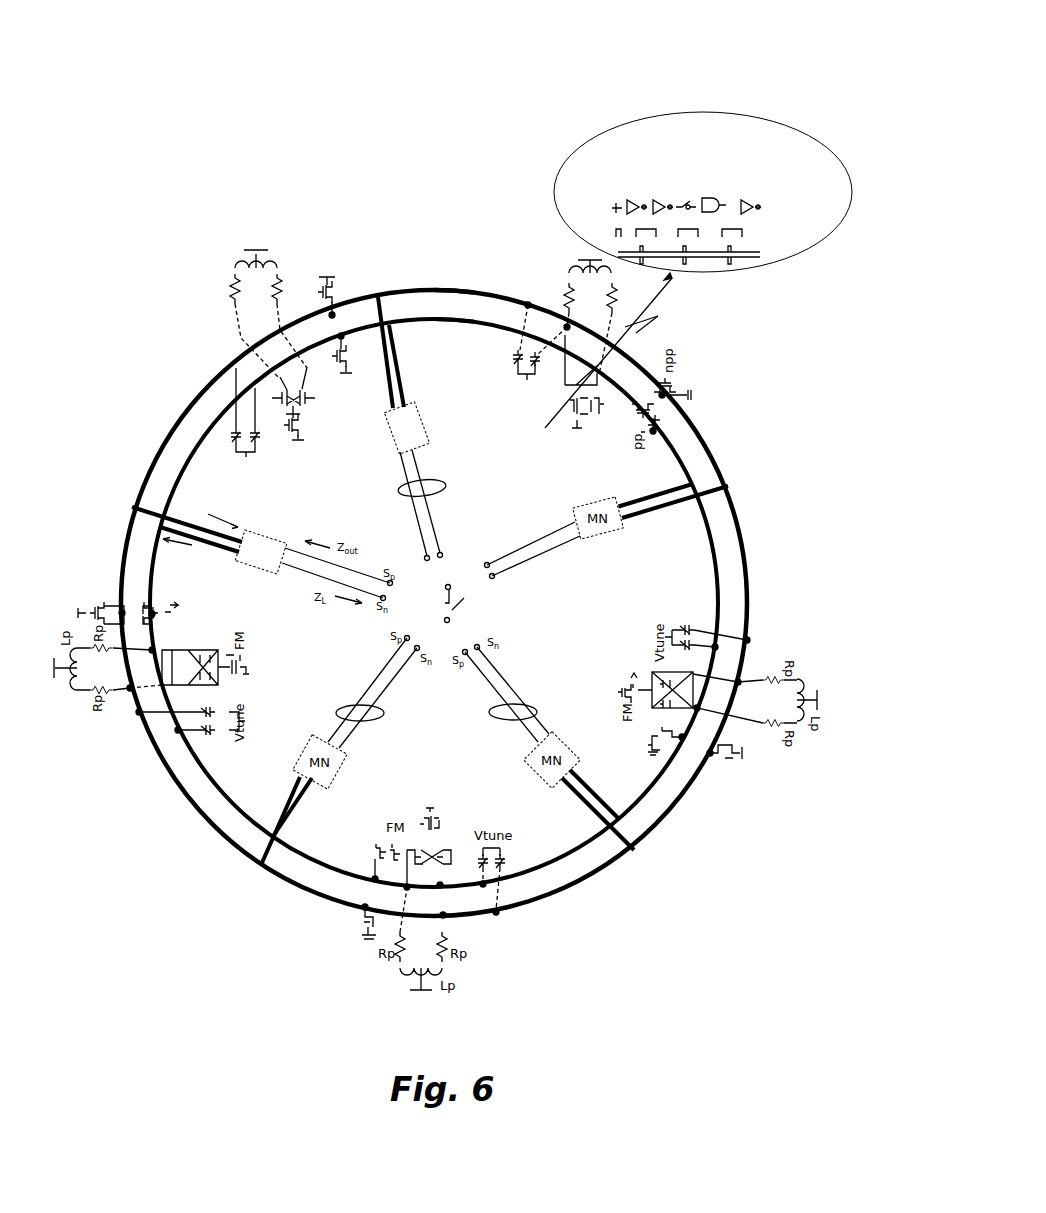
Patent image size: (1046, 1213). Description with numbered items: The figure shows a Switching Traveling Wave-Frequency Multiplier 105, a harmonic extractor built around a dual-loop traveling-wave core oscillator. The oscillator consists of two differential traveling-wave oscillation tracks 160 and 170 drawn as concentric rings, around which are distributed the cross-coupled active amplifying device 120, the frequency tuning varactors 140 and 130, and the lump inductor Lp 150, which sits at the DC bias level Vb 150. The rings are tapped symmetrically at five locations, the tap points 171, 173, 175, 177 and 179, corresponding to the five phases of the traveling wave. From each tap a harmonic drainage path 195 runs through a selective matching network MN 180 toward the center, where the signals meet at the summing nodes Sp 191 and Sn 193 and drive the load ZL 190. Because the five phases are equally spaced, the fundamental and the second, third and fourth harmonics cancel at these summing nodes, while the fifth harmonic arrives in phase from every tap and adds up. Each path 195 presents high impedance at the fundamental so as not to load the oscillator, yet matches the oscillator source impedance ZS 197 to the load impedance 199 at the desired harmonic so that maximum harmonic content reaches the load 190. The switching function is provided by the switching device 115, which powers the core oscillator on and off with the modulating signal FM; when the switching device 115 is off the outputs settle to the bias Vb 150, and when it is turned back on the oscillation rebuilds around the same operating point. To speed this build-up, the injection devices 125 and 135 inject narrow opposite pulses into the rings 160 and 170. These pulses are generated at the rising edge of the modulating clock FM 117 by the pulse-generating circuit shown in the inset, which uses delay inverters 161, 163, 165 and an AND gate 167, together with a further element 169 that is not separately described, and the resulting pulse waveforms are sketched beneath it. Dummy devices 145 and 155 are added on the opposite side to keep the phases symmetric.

The Switching Traveling Wave-Frequency Multiplier 105 is at (700, 143).
The switching device M3 115 is at (300, 430).
The modulating clock FM 117 is at (588, 357).
The distributed cross-coupled active amplifying device M2 120 is at (315, 405).
The injection device M4 125 is at (327, 284).
The distributed frequency tuning varactor C2 130 is at (250, 433).
The injection device M5 135 is at (338, 368).
The distributed frequency tuning varactor C1 140 is at (278, 443).
The dummy device M8 145 is at (110, 605).
The distributed lump inductor Lp 150 is at (242, 266).
The dummy device M9 155 is at (170, 616).
The differential traveling-wave oscillation track 160 is at (418, 292).
The delay inverter 161 is at (636, 198).
The delay inverter 163 is at (660, 205).
The delay inverter 165 is at (686, 206).
The AND gate 167 is at (720, 200).
The inverter 169 is at (760, 202).
The differential traveling-wave oscillation track 170 is at (420, 323).
The tap point ph0 171 is at (166, 518).
The tap point ph1 173 is at (379, 334).
The tap point ph2 175 is at (697, 483).
The tap point ph3 177 is at (621, 825).
The tap point ph4 179 is at (270, 843).
The selective matching network MN 180 is at (267, 535).
The load ZL 190 is at (455, 612).
The summing node Sp 191 is at (498, 578).
The summing node Sn 193 is at (488, 556).
The harmonic drainage path 195 is at (440, 480).
The oscillator source impedance ZS 197 is at (185, 553).
The load impedance 199 is at (212, 512).